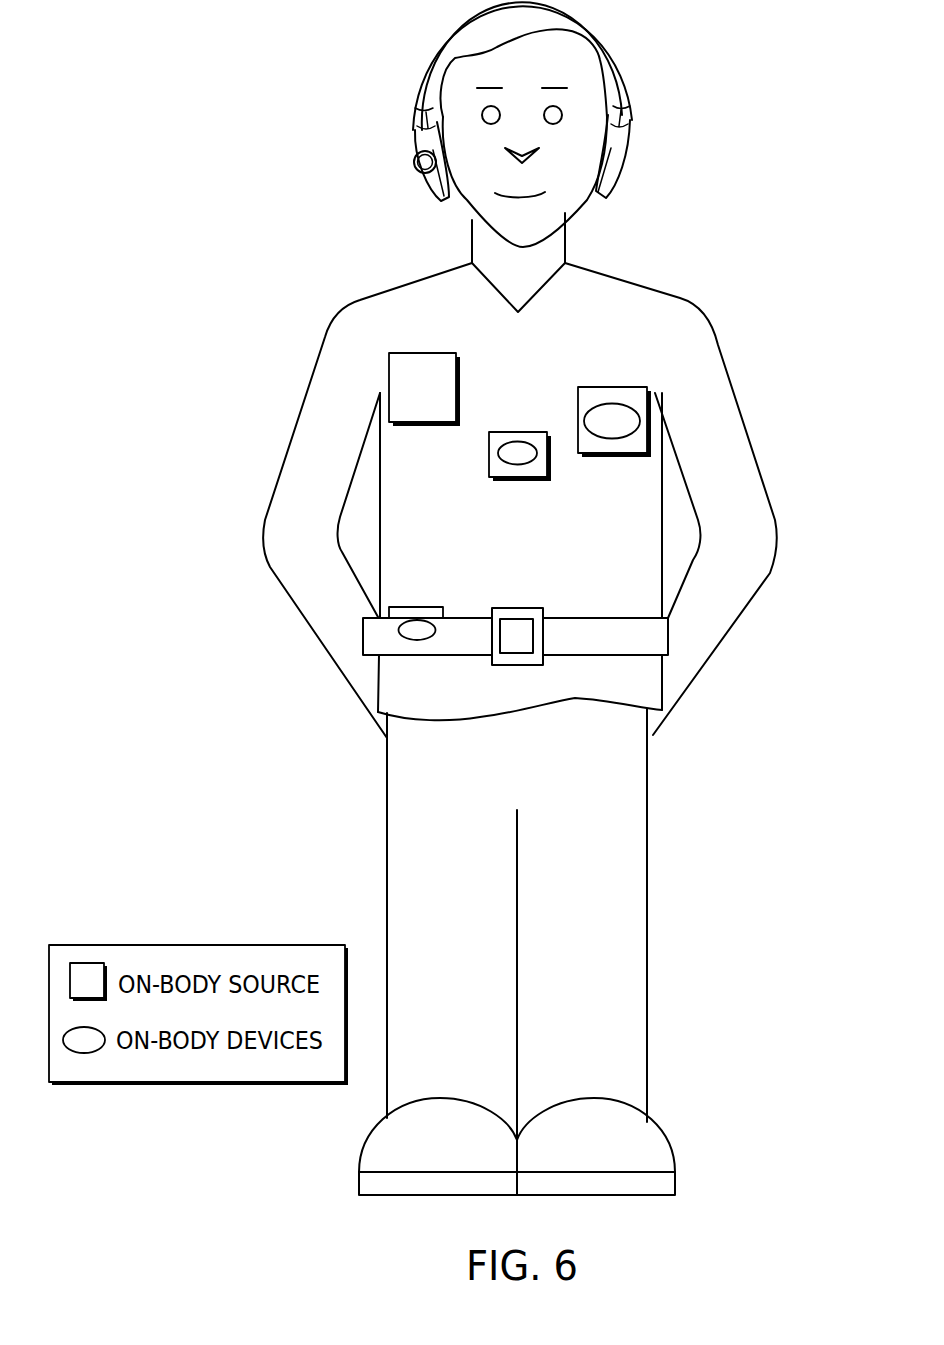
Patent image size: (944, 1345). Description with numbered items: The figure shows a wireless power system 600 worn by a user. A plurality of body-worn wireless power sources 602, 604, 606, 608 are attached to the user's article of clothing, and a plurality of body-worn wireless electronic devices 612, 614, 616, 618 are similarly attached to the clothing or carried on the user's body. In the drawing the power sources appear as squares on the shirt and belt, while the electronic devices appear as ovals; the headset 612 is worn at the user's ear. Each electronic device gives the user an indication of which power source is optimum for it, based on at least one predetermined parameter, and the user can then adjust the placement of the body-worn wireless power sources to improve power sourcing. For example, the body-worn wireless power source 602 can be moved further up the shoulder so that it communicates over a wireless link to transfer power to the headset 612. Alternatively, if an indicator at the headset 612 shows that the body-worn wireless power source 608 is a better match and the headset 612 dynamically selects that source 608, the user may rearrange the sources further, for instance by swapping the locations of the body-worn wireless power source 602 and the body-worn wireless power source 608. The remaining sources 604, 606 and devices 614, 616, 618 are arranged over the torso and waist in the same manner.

The wireless power system 600 is at (797, 1114).
The body-worn wireless power source 602 is at (421, 353).
The body-worn wireless power source 604 is at (612, 387).
The body-worn wireless power source 606 is at (517, 432).
The body-worn wireless power source 608 is at (416, 607).
The headset 612 is at (418, 165).
The body-worn wireless electronic device 614 is at (612, 428).
The body-worn wireless electronic device 616 is at (517, 457).
The body-worn wireless electronic device 618 is at (417, 640).